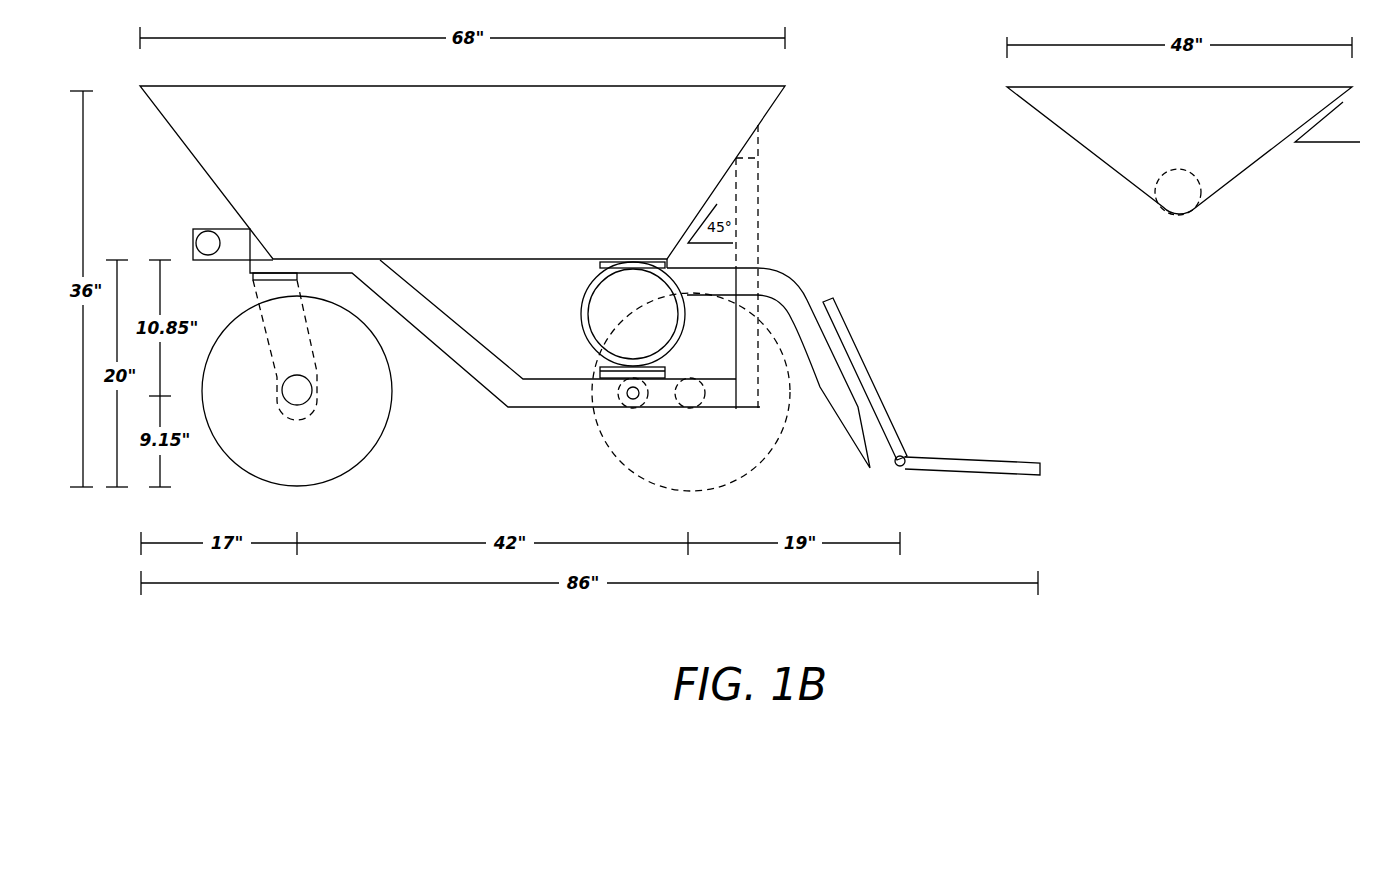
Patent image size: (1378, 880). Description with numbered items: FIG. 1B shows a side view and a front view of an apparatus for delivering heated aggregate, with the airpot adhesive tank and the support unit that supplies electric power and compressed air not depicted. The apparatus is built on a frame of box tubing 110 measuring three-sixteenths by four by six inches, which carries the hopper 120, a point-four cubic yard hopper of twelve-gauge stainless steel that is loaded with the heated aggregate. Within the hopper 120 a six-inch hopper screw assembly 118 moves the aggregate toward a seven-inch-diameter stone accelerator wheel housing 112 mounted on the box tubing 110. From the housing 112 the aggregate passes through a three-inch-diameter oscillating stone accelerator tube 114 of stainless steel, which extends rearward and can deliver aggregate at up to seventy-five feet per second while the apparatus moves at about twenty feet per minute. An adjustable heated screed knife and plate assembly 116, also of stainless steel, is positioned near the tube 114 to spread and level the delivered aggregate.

The box tubing 110 is at (452, 366).
The stone accelerator wheel housing 112 is at (585, 349).
The oscillating stone accelerator tube 114 is at (807, 282).
The adjustable heated screed knife and plate assembly 116 is at (891, 412).
The hopper screw ASM 118 is at (1200, 210).
The hopper 120 is at (1273, 157).